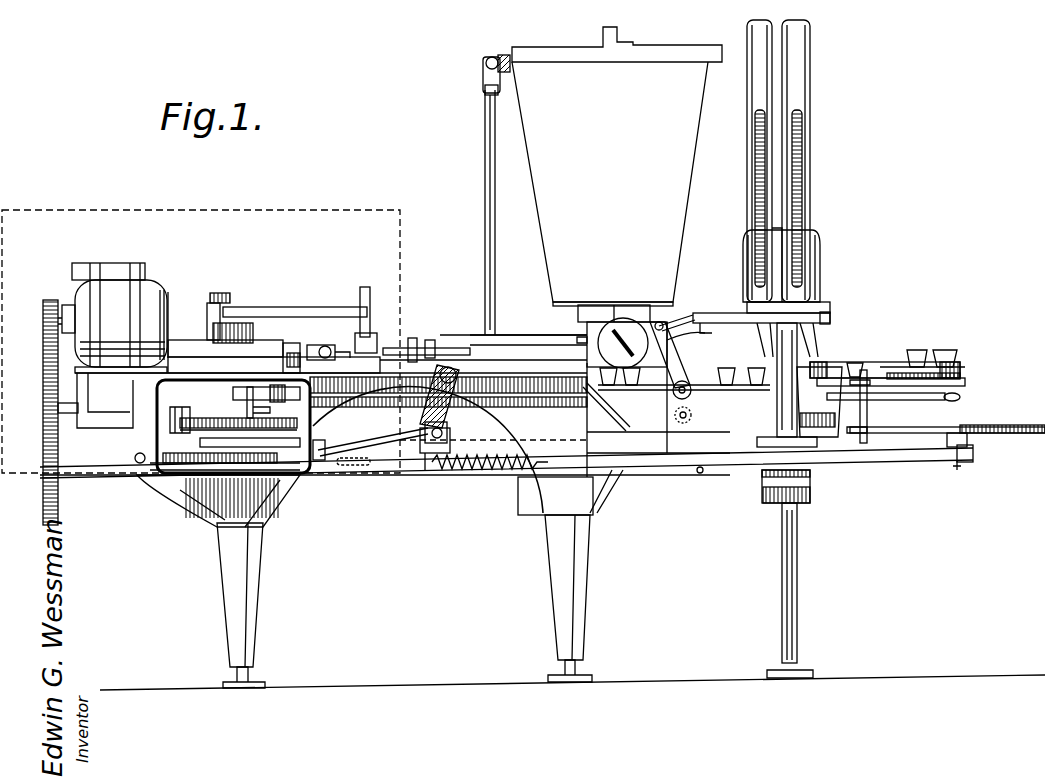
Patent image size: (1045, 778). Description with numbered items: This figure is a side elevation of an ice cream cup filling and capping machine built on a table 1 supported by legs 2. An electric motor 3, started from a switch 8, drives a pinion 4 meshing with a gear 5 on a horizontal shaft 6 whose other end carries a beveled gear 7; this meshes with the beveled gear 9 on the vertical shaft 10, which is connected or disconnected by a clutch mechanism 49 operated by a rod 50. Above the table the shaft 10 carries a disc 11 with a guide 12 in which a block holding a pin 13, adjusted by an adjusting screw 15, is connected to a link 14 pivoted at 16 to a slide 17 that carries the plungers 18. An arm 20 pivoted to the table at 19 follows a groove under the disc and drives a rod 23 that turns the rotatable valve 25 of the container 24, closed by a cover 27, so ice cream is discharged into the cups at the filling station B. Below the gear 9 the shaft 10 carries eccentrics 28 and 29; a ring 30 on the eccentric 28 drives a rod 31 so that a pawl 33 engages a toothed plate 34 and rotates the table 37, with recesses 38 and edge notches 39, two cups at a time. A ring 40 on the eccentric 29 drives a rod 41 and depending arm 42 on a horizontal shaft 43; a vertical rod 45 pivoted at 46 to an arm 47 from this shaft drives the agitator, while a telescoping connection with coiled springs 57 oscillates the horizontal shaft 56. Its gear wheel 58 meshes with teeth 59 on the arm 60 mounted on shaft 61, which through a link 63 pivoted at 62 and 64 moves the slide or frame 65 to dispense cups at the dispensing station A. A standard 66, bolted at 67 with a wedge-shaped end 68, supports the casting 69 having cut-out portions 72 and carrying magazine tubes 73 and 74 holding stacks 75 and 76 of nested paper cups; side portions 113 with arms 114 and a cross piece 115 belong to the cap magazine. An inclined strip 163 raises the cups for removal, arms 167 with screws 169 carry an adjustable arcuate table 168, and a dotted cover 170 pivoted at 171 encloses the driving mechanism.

The table 1 is at (510, 413).
The legs 2 is at (247, 605).
The electric motor 3 is at (120, 298).
The pinion 4 is at (43, 312).
The gear 5 is at (58, 410).
The horizontal shaft 6 is at (108, 420).
The beveled gear 7 is at (185, 407).
The switch 8 is at (118, 263).
The beveled gear 9 is at (182, 437).
The vertical shaft 10 is at (230, 410).
The disc 11 is at (180, 340).
The guide 12 is at (233, 327).
The pin 13 is at (223, 293).
The link 14 is at (307, 307).
The adjusting screw 15 is at (197, 337).
The pivotal connection 16 is at (368, 290).
The slide 17 is at (380, 340).
The plungers 18 is at (452, 332).
The pivot 19 is at (280, 392).
The arm 20 is at (322, 348).
The rod 23 is at (402, 342).
The container 24 is at (677, 192).
The rotatable valve 25 is at (618, 335).
The cover 27 is at (667, 52).
The eccentric 28 is at (205, 487).
The eccentric 29 is at (173, 460).
The band or ring 30 is at (280, 437).
The rod 31 is at (612, 490).
The pawl 33 is at (772, 450).
The toothed plate 34 is at (815, 443).
The rotatable table 37 is at (900, 360).
The recesses 38 is at (860, 363).
The notches 39 is at (950, 360).
The band or ring 40 is at (163, 465).
The rod 41 is at (363, 443).
The depending arm 42 is at (462, 413).
The horizontal shaft 43 is at (450, 368).
The vertically extending rod 45 is at (485, 145).
The pivotal connection 46 is at (486, 62).
The arm 47 is at (502, 55).
The clutch mechanism 49 is at (290, 353).
The rod 50 is at (886, 398).
The horizontal shaft 56 is at (677, 412).
The coiled springs 57 is at (510, 467).
The gear wheel 58 is at (700, 470).
The teeth 59 is at (690, 380).
The arm 60 is at (690, 350).
The horizontal shaft 61 is at (618, 398).
The pivotal connection 62 is at (694, 314).
The link 63 is at (690, 333).
The pivotal connection 64 is at (712, 331).
The slide or frame 65 is at (727, 312).
The standard 66 is at (793, 400).
The bolts 67 is at (817, 437).
The wedge-shaped upper end 68 is at (790, 347).
The casting 69 is at (820, 302).
The cut-out portions 72 is at (822, 304).
The tube or magazine 73 is at (752, 105).
The tube or magazine 74 is at (808, 103).
The stack of nested paper receptacles 75 is at (755, 150).
The stack of nested paper receptacles 76 is at (802, 160).
The upwardly extending side portions 113 is at (822, 258).
The forwardly extending arms 114 is at (822, 233).
The cross piece 115 is at (778, 228).
The cup dispensing station A is at (812, 220).
The filling station B is at (663, 320).
The inclined plate or strip 163 is at (965, 382).
The arms 167 is at (897, 460).
The arcuate-shaped table 168 is at (1000, 427).
The screws 169 is at (965, 466).
The cover 170 is at (372, 212).
The pivotal connection 171 is at (135, 465).